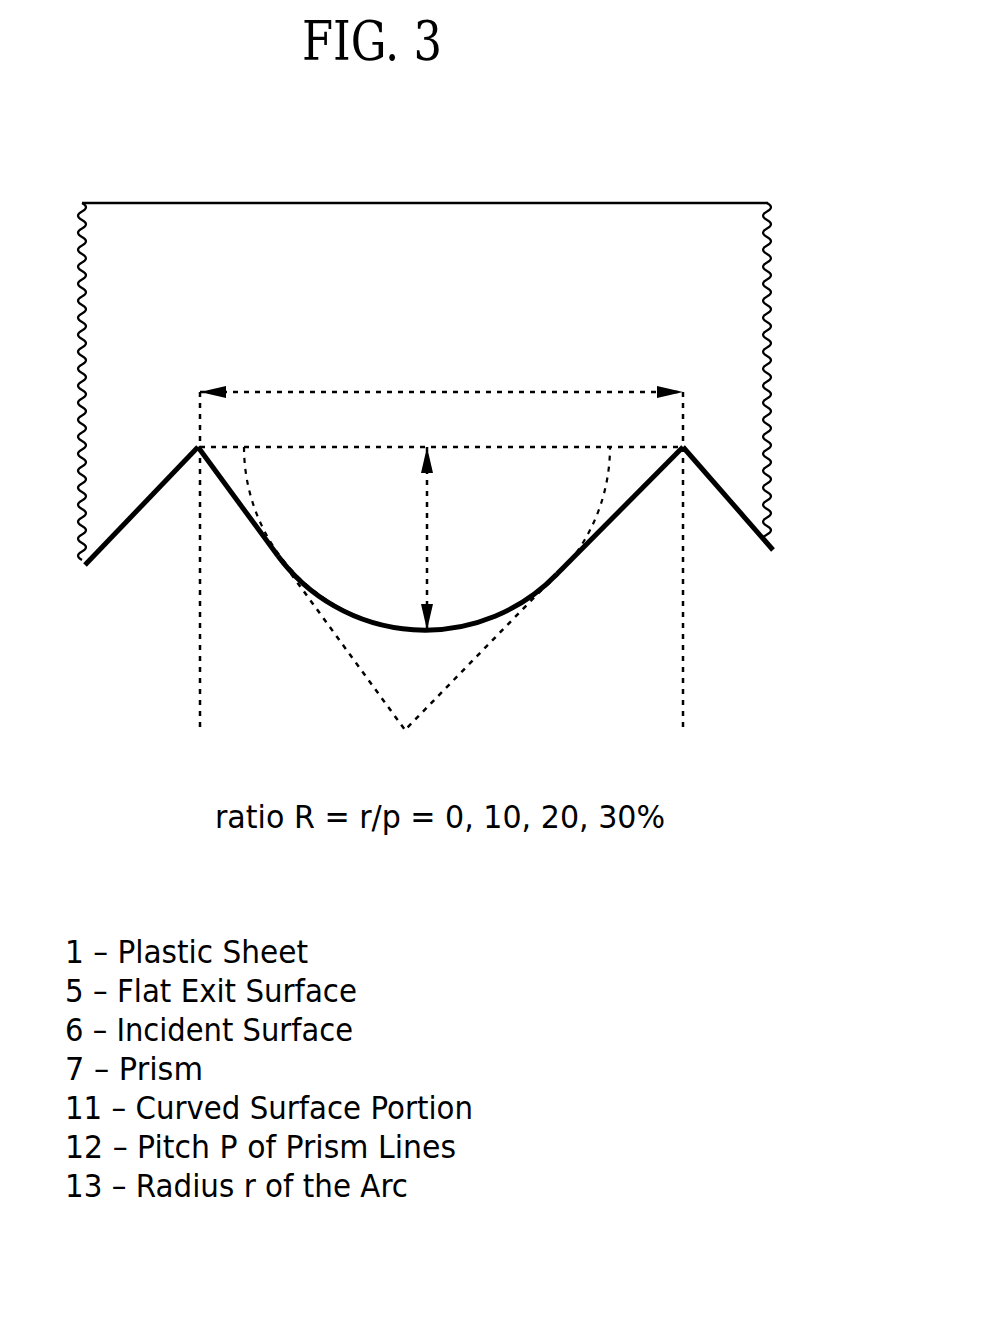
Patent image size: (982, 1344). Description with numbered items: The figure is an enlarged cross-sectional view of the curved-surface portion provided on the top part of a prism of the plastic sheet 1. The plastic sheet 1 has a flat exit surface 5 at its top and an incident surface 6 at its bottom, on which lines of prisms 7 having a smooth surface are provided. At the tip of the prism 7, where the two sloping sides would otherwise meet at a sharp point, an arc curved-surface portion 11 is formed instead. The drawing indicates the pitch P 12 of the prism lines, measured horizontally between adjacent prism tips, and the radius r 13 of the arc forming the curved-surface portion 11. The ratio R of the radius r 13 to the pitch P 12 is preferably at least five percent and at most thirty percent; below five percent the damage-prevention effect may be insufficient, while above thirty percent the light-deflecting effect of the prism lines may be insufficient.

The plastic sheet 1 is at (770, 287).
The flat exit surface 5 is at (175, 202).
The incident surface 6 is at (128, 525).
The prism 7 is at (453, 504).
The arc curved-surface portion 11 is at (347, 615).
The pitch P of the prism lines 12 is at (432, 327).
The radius r of the arc 13 is at (460, 550).